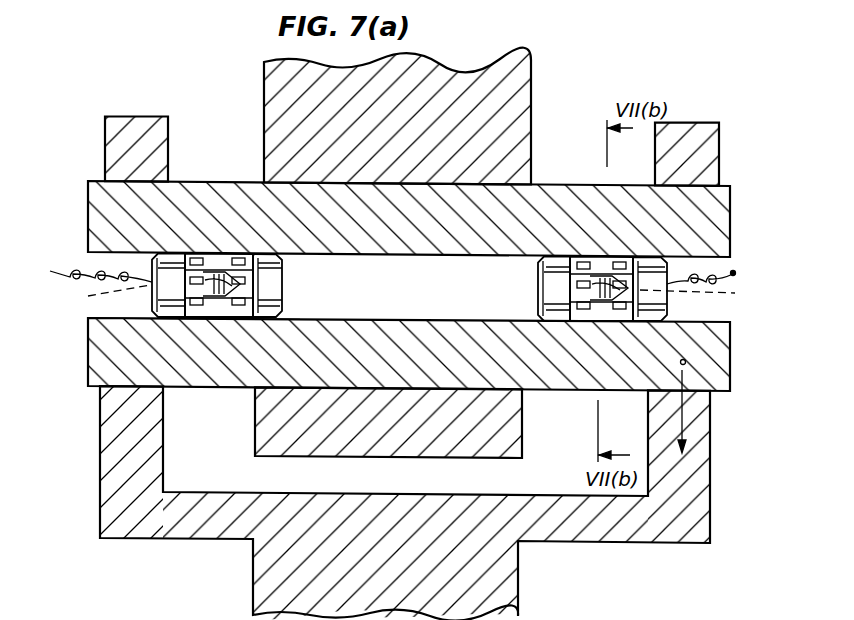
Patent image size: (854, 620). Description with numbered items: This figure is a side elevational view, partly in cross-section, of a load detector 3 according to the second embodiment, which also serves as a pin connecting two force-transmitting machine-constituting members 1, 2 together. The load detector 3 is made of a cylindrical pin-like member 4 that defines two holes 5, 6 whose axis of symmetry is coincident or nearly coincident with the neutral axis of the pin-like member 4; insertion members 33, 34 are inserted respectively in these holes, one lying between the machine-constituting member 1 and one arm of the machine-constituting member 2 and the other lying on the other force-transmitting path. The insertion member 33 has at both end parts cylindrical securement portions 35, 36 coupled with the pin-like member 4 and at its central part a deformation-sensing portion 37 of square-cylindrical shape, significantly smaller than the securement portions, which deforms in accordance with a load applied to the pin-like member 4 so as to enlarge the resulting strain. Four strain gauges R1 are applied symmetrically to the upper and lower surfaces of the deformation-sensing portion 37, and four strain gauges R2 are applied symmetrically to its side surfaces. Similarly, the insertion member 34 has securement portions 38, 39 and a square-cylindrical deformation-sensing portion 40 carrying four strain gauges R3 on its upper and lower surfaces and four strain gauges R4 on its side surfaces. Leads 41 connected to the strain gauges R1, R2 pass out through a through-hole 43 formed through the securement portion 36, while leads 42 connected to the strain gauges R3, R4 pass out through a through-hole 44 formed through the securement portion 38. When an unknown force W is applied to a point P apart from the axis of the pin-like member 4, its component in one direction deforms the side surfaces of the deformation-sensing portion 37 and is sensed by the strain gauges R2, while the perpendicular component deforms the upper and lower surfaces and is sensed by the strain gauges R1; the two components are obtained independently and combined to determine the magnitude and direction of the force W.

The machine-constituting member 1 is at (531, 84).
The machine-constituting member 2 is at (519, 585).
The load detector 3 is at (531, 180).
The pin-like member 4 is at (732, 206).
The hole 5 is at (724, 319).
The hole 6 is at (90, 308).
The insertion member 33 is at (626, 284).
The insertion member 34 is at (192, 280).
The securement portion 35 is at (557, 256).
The securement portion 36 is at (652, 257).
The deformation-sensing portion 37 is at (595, 290).
The securement portion 38 is at (175, 253).
The securement portion 39 is at (256, 253).
The deformation-sensing portion 40 is at (216, 280).
The leads 41 is at (745, 278).
The leads 42 is at (76, 268).
The through-hole 43 is at (736, 294).
The through-hole 44 is at (90, 295).
The strain gauges R1 is at (580, 256).
The strain gauges R2 is at (575, 322).
The strain gauges R3 is at (196, 253).
The strain gauges R4 is at (203, 388).
The point P is at (691, 365).
The unknown force W is at (680, 425).